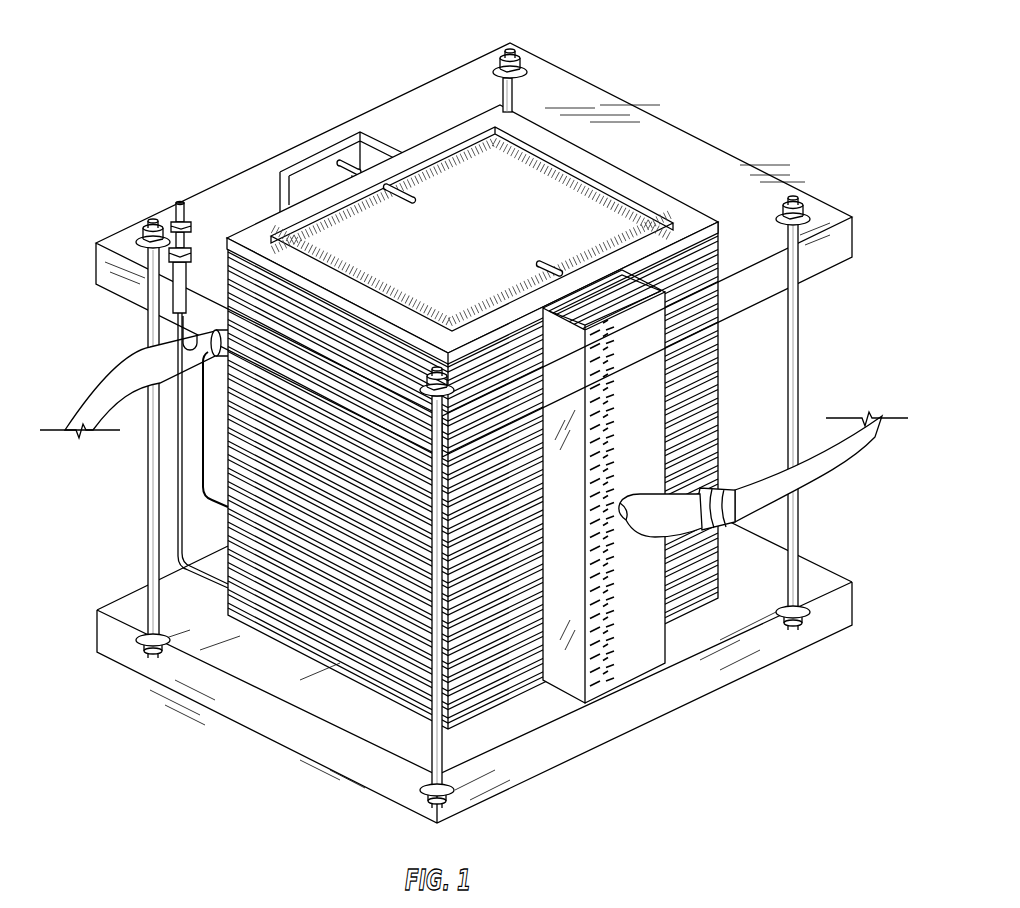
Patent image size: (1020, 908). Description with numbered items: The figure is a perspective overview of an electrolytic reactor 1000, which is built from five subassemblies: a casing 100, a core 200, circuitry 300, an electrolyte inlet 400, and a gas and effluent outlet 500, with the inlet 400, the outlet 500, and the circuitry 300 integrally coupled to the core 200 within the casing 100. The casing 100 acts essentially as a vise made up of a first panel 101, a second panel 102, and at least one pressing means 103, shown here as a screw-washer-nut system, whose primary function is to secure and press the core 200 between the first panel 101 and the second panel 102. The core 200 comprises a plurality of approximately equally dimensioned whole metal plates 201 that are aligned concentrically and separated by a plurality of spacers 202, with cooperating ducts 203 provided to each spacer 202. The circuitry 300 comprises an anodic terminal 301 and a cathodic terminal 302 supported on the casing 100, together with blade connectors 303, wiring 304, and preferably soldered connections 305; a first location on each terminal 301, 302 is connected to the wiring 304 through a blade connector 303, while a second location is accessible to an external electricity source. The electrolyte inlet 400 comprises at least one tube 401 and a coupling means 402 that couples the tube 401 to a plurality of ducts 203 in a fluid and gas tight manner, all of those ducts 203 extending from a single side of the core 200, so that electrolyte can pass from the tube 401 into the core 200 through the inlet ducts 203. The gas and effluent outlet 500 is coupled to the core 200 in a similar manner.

The electrolytic reactor 1000 is at (672, 46).
The casing 100 is at (474, 250).
The first panel 101 is at (580, 102).
The second panel 102 is at (342, 699).
The pressing means 103 is at (503, 86).
The core 200 is at (288, 617).
The metal plates 201 is at (557, 207).
The spacers 202 is at (472, 234).
The ducts 203 is at (411, 201).
The circuitry 300 is at (137, 388).
The anodic terminal 301 is at (185, 203).
The cathodic terminal 302 is at (192, 226).
The blade connector 303 is at (200, 330).
The wiring 304 is at (178, 507).
The soldered connections 305 is at (229, 593).
The electrolyte inlet 400 is at (606, 519).
The tube 401 is at (855, 445).
The coupling means 402 is at (614, 670).
The gas and effluent outlet 500 is at (283, 173).